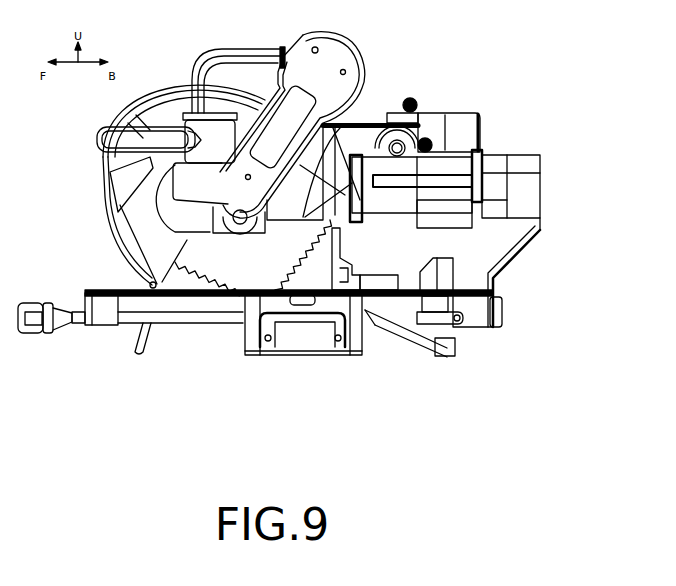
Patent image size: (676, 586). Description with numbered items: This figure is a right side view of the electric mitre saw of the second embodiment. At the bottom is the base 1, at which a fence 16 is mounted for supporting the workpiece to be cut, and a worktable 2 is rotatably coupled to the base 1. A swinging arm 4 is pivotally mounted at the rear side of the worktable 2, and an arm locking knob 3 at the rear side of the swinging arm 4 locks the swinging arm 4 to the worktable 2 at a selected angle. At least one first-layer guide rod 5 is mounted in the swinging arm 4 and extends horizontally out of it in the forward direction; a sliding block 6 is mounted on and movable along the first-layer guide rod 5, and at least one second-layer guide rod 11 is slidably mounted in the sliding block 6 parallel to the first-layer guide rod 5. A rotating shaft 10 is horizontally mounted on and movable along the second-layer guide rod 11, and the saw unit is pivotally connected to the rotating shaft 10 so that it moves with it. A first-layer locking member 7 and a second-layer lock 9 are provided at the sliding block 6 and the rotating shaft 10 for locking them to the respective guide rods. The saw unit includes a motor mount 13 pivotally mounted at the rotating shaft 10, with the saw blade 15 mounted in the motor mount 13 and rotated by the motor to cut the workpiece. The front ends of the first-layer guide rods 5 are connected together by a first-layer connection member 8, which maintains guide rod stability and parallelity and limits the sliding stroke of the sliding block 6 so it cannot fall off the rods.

The base 1 is at (305, 330).
The worktable 2 is at (392, 302).
The arm locking knob 3 is at (504, 313).
The swinging arm 4 is at (505, 243).
The first-layer guide rod 5 is at (495, 167).
The sliding block 6 is at (488, 155).
The first-layer locking member 7 is at (462, 110).
The first-layer connection member 8 is at (284, 54).
The second-layer lock 9 is at (409, 98).
The rotating shaft 10 is at (396, 111).
The second-layer guide rod 11 is at (428, 135).
The motor mount 13 is at (360, 125).
The saw blade 15 is at (222, 270).
The fence 16 is at (337, 296).